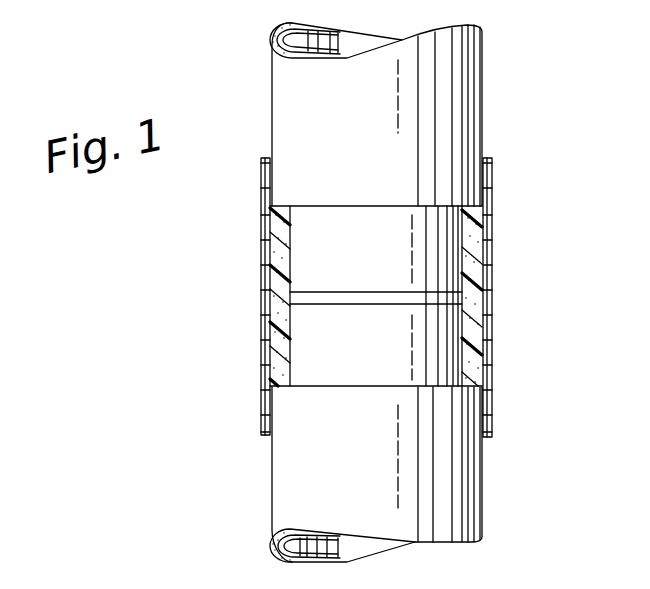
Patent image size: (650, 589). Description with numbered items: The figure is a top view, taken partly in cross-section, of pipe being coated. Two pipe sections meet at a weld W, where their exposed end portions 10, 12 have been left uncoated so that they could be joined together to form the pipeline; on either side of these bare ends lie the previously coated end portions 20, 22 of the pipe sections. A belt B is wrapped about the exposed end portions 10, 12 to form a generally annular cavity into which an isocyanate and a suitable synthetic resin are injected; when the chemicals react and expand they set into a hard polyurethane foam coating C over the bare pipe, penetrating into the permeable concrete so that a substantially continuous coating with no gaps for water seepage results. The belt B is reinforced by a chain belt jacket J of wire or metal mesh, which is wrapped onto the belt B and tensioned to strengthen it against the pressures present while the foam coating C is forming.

The coated end portion 20 is at (404, 167).
The coated end portion 22 is at (365, 410).
The exposed end portion 10 is at (443, 265).
The exposed end portion 12 is at (440, 348).
The belt B is at (483, 210).
The chain belt jacket J is at (492, 243).
The coating C is at (472, 315).
The weld W is at (310, 297).